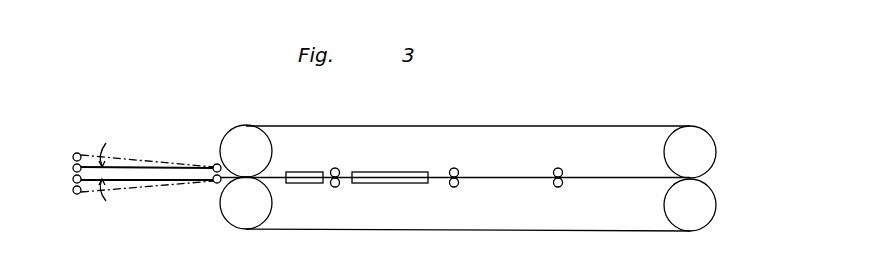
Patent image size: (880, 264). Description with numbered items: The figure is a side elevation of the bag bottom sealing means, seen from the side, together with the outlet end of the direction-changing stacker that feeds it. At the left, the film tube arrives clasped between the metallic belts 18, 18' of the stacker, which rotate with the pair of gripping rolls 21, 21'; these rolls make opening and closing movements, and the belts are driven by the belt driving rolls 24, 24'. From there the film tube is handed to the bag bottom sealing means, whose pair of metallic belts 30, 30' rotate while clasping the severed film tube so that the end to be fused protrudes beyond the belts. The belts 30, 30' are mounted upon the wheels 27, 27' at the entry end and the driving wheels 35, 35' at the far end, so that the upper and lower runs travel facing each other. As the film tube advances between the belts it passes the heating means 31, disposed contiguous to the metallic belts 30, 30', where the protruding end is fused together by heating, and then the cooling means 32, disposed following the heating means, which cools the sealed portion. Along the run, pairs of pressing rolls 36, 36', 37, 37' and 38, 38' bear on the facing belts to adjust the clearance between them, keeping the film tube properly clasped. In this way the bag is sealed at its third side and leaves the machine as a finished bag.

The metallic belt 18 is at (147, 146).
The metallic belt 18' is at (147, 205).
The gripping roll 21 is at (86, 143).
The gripping roll 21' is at (98, 202).
The belt driving roll 24 is at (204, 144).
The belt driving roll 24' is at (198, 203).
The wheel 27 is at (249, 137).
The wheel 27' is at (248, 217).
The metallic belt 30 is at (468, 112).
The metallic belt 30' is at (468, 246).
The heating means 31 is at (304, 175).
The cooling means 32 is at (390, 175).
The driving wheel 35 is at (683, 141).
The driving wheel 35' is at (667, 205).
The pressing roll 36 is at (349, 158).
The pressing roll 36' is at (350, 197).
The pressing roll 37 is at (475, 161).
The pressing roll 37' is at (464, 197).
The pressing roll 38 is at (578, 161).
The pressing roll 38' is at (537, 195).